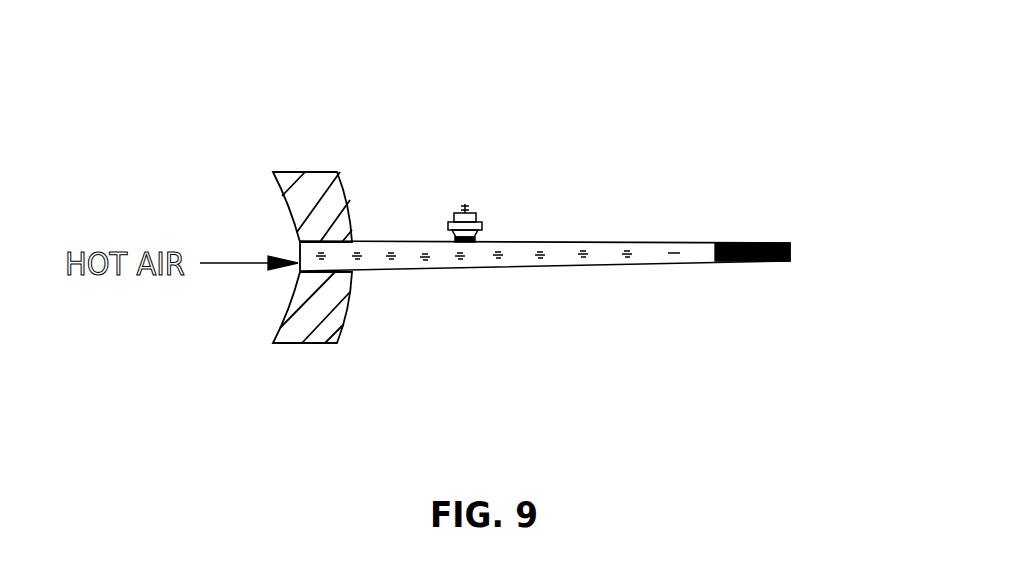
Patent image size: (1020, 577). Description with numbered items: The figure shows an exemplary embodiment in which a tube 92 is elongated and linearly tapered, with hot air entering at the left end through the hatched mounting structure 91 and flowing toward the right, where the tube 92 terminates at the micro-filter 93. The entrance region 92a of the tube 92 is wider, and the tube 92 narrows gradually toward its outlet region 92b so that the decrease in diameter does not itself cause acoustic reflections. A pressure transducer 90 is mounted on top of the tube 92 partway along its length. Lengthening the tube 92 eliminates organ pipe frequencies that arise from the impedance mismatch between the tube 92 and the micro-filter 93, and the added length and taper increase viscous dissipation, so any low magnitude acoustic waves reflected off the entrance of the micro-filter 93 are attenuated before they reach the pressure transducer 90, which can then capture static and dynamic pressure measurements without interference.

The pressure transducer 90 is at (475, 210).
The flange 91 is at (303, 173).
The tube 92 is at (595, 267).
The duct inlet 92a is at (288, 281).
The duct outlet 92b is at (667, 270).
The micro-filter 93 is at (738, 265).